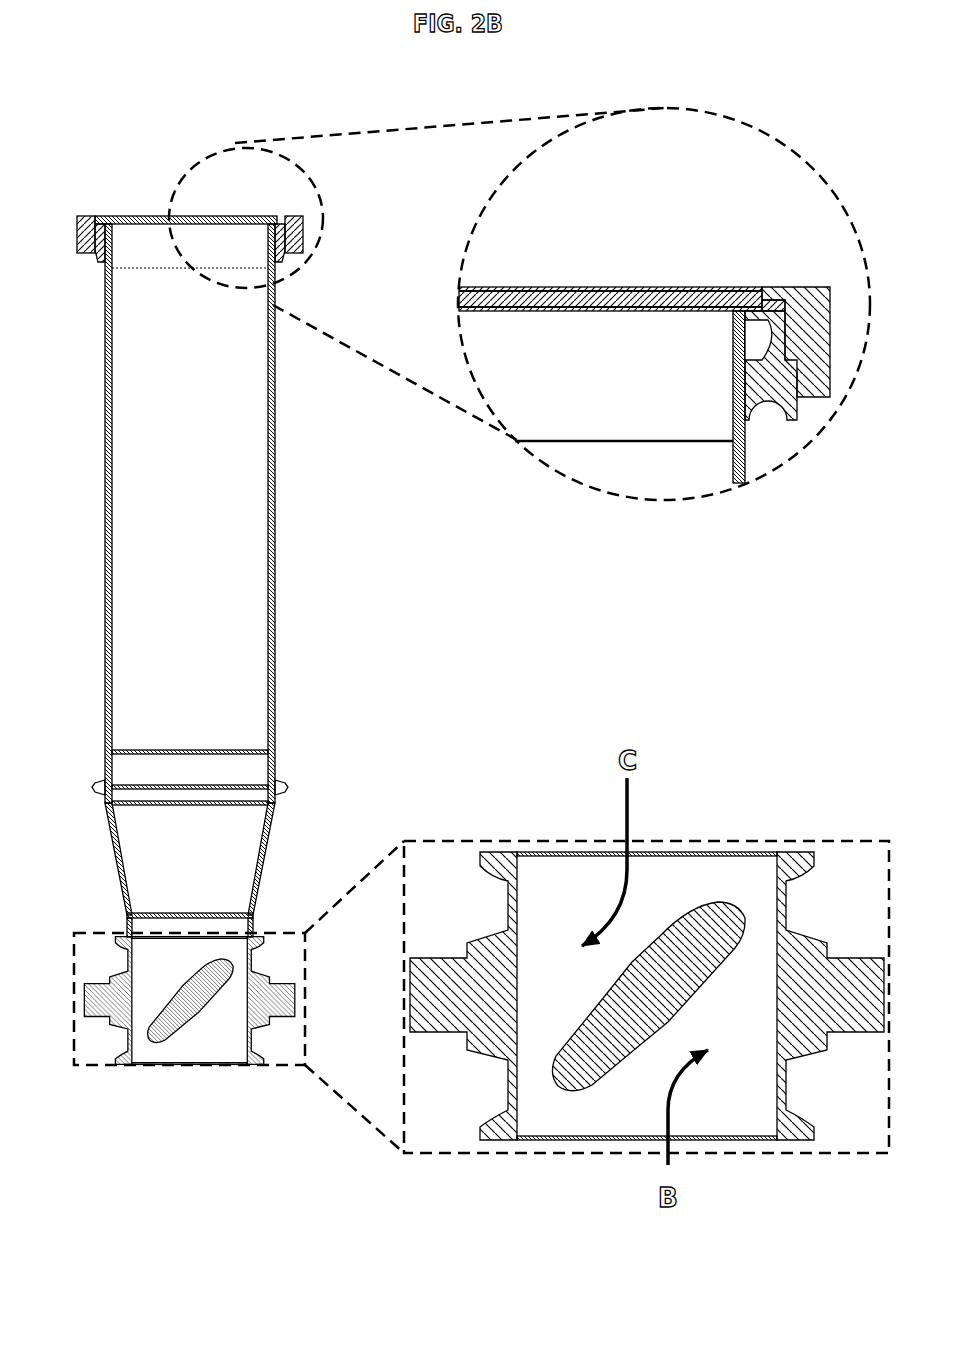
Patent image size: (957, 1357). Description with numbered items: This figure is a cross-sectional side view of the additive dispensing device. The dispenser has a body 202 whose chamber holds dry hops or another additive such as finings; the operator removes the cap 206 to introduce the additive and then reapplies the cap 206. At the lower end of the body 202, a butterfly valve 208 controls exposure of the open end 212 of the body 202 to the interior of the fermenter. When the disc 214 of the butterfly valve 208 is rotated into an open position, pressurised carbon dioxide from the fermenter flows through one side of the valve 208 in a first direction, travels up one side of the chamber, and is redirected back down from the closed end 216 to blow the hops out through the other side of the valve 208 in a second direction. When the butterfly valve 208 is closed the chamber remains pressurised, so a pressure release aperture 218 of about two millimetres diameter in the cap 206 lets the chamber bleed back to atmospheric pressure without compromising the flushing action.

The body 202 is at (288, 524).
The cap 206 is at (90, 207).
The butterfly valve 208 is at (193, 1090).
The open end 212 is at (188, 888).
The disc 214 is at (720, 900).
The closed end 216 is at (188, 318).
The pressure release aperture 218 is at (509, 278).